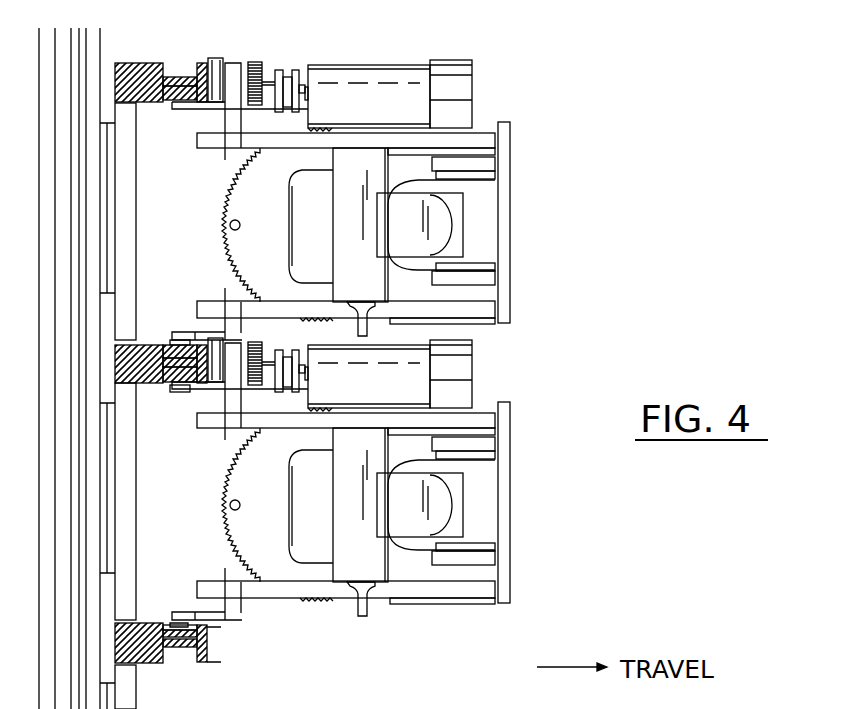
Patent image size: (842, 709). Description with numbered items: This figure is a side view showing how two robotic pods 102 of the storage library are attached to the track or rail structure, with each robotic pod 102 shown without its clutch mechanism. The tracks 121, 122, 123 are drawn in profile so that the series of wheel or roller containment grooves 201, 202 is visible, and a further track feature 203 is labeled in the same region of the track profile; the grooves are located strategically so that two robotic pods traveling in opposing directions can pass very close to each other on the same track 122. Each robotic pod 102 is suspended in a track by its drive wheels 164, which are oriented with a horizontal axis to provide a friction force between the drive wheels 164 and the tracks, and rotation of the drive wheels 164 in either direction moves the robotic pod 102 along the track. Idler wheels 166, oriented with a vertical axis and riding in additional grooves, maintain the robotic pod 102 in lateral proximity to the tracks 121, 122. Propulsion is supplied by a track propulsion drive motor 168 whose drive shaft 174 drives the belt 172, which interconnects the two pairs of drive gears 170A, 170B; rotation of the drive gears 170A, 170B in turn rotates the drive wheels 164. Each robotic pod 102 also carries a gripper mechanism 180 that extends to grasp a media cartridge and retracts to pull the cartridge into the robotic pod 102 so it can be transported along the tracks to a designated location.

The robotic pod 102 is at (562, 239).
The track 121 is at (147, 66).
The track 122 is at (146, 385).
The track 123 is at (150, 663).
The drive wheels 164 is at (173, 98).
The idler wheels 166 is at (222, 84).
The track propulsion drive motor 168 is at (400, 65).
The drive gears 170A is at (815, 699).
The drive gears 170B is at (431, 708).
The belt 172 is at (609, 702).
The drive shaft 174 is at (310, 103).
The gripper mechanism 180 is at (477, 177).
The containment groove 201 is at (226, 60).
The containment groove 202 is at (184, 79).
The bearing 203 is at (173, 76).